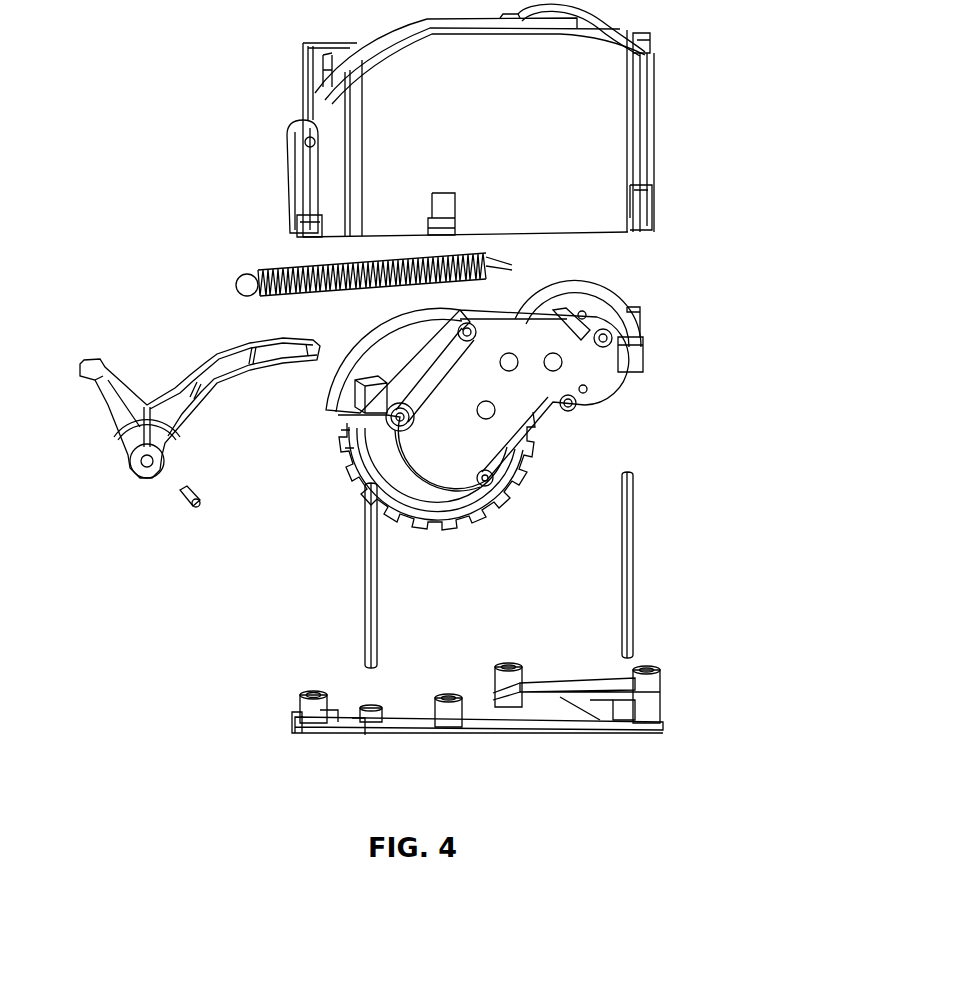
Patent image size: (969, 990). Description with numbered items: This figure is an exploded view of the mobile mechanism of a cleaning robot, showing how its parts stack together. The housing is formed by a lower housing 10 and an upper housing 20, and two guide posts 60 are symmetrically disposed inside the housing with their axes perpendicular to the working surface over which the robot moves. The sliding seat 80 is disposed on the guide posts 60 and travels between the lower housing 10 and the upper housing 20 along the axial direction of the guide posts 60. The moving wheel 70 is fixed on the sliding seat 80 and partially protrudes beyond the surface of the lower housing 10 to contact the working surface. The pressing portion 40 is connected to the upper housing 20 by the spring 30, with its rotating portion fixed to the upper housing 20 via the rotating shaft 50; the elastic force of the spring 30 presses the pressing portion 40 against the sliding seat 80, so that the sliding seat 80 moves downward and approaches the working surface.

The lower housing 10 is at (297, 703).
The upper housing 20 is at (597, 148).
The spring 30 is at (277, 268).
The pressing portion 40 is at (105, 408).
The rotating shaft 50 is at (175, 497).
The guide post 60 is at (363, 603).
The moving wheel 70 is at (485, 507).
The sliding seat 80 is at (520, 412).